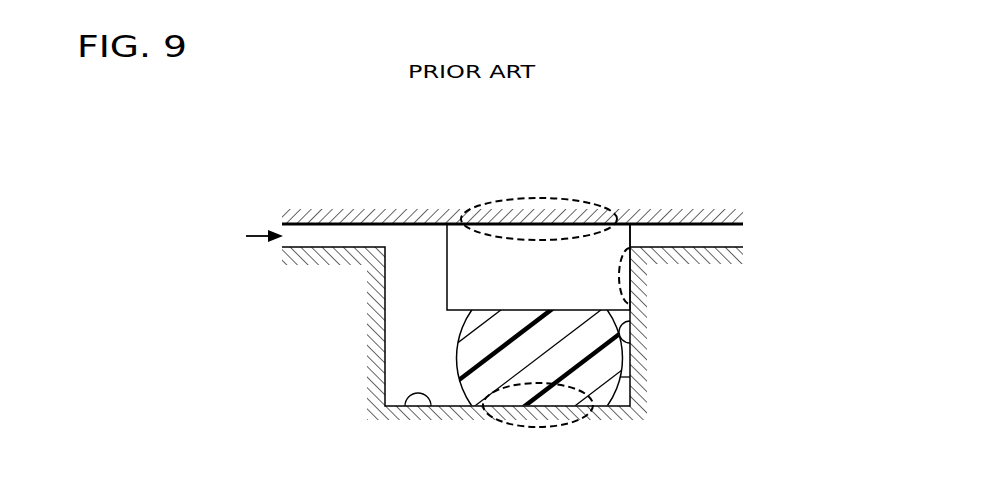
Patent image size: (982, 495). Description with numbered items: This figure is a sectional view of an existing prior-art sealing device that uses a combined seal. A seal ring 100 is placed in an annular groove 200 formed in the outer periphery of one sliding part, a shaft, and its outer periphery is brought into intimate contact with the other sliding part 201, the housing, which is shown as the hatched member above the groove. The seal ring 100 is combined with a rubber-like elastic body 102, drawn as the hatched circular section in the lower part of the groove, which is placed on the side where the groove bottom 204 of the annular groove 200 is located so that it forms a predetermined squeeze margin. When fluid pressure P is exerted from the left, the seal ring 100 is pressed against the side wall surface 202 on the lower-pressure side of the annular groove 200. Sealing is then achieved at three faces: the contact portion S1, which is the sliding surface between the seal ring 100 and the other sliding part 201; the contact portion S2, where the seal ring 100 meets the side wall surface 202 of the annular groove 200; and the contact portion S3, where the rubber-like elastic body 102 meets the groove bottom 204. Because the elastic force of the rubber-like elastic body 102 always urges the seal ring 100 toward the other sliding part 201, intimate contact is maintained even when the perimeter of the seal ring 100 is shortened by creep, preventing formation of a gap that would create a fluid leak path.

The seal ring 100 is at (452, 259).
The rubber-like elastic body 102 is at (622, 377).
The annular groove 200 is at (382, 316).
The other sliding part 201 is at (667, 164).
The side wall surface 202 is at (631, 323).
The groove bottom 204 is at (403, 406).
The contact portion S1 is at (539, 208).
The contact portion S2 is at (650, 276).
The contact portion S3 is at (538, 420).
The fluid pressure P is at (253, 238).